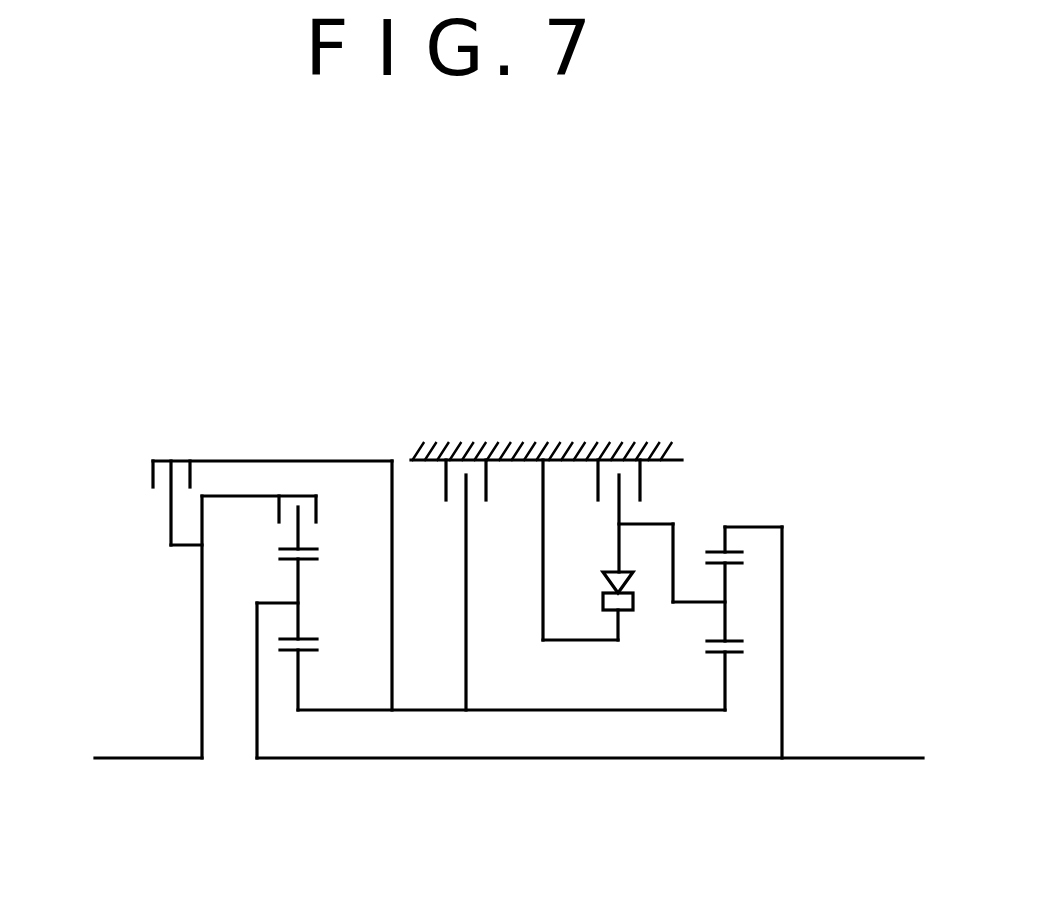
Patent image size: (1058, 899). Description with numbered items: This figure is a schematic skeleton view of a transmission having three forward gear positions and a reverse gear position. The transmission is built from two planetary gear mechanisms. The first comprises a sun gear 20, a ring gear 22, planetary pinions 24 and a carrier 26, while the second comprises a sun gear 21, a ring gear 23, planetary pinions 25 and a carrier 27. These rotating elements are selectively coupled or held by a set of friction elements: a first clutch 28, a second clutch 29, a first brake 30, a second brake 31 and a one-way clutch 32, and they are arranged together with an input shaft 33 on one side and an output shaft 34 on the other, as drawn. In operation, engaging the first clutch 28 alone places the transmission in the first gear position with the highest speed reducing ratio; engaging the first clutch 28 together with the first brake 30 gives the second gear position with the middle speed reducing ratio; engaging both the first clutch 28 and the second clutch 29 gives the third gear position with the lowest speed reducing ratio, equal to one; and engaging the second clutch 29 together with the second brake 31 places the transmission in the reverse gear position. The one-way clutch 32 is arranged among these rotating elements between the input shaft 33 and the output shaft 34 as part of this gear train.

The sun gear 20 is at (300, 652).
The sun gear 21 is at (720, 653).
The ring gear 22 is at (298, 552).
The ring gear 23 is at (732, 545).
The planetary pinions 24 is at (298, 625).
The planetary pinions 25 is at (720, 638).
The carrier 26 is at (255, 628).
The carrier 27 is at (677, 547).
The clutch 28 is at (300, 495).
The clutch 29 is at (167, 460).
The brake 30 is at (475, 480).
The brake 31 is at (633, 480).
The one-way clutch 32 is at (603, 603).
The input shaft 33 is at (125, 758).
The output shaft 34 is at (858, 758).